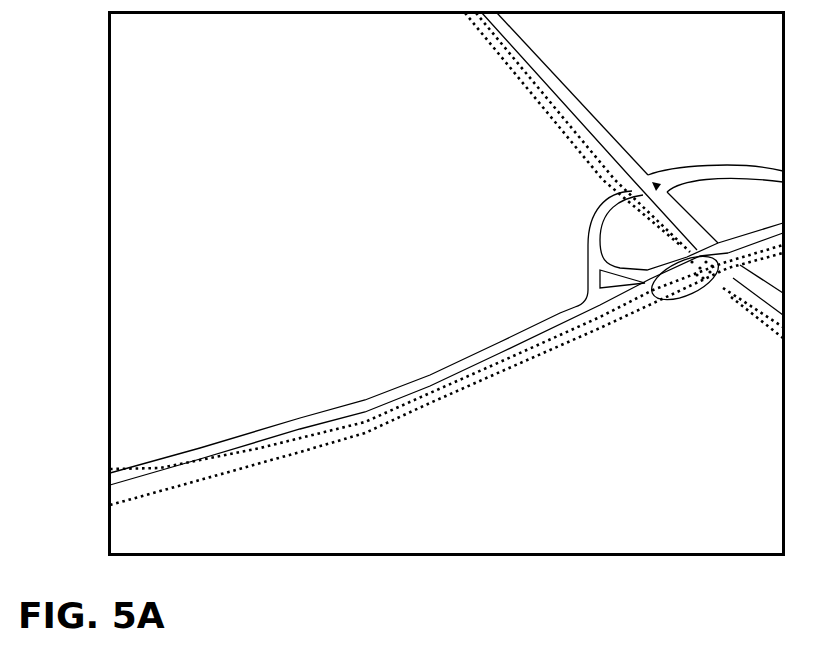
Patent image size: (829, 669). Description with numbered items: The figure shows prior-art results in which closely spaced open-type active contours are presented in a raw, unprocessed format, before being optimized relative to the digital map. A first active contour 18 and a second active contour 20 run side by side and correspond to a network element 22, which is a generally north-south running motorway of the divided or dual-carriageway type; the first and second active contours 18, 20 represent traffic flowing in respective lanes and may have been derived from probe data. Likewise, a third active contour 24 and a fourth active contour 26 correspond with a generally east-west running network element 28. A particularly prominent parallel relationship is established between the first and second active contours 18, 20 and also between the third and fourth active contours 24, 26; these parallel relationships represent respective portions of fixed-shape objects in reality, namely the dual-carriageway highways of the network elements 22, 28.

The first active contour 18 is at (488, 47).
The second active contour 20 is at (533, 72).
The network element 22 is at (571, 93).
The third active contour 24 is at (227, 452).
The fourth active contour 26 is at (285, 462).
The network element 28 is at (310, 410).